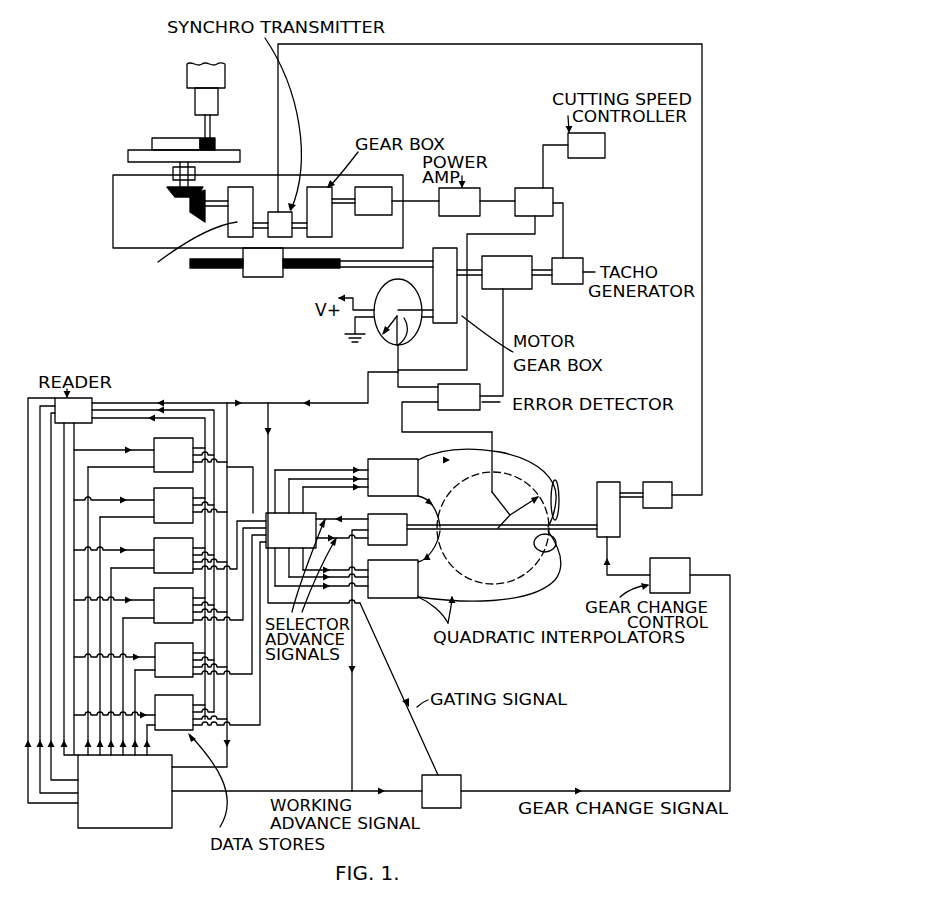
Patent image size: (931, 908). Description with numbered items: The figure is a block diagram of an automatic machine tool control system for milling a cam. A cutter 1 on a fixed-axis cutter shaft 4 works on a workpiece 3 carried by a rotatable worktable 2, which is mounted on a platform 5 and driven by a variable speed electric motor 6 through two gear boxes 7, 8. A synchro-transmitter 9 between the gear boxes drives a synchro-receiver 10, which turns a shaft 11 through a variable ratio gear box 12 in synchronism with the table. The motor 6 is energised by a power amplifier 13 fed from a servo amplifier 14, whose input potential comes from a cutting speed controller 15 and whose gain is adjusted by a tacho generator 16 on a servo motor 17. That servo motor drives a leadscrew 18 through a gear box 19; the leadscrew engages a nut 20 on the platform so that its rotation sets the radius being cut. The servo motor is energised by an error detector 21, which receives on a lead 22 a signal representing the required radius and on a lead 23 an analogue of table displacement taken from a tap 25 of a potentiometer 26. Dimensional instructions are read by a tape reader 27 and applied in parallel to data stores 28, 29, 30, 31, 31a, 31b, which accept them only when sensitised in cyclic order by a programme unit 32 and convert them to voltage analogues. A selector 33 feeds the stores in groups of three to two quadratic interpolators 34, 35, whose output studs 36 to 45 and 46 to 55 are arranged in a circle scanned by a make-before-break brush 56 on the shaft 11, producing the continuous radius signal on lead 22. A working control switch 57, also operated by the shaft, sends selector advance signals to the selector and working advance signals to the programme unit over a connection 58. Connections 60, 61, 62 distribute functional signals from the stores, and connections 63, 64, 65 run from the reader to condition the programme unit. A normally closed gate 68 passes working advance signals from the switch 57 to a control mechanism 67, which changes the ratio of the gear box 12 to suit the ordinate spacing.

The cutter 1 is at (218, 146).
The worktable 2 is at (128, 156).
The workpiece 3 is at (162, 138).
The cutter shaft 4 is at (213, 129).
The platform 5 is at (113, 203).
The electric motor 6 is at (371, 215).
The gear box 7 is at (323, 232).
The gear box 8 is at (236, 223).
The synchro-transmitter 9 is at (279, 212).
The synchro-receiver 10 is at (657, 482).
The shaft 11 is at (565, 531).
The gear box 12 is at (607, 482).
The power amplifier 13 is at (480, 192).
The servo amplifier 14 is at (553, 200).
The cutting speed controller 15 is at (605, 145).
The tacho generator 16 is at (569, 284).
The servo motor 17 is at (521, 289).
The leadscrew 18 is at (321, 268).
The gear box 19 is at (445, 323).
The nut 20 is at (268, 278).
The error detector 21 is at (471, 410).
The lead 22 is at (497, 443).
The lead 23 is at (398, 359).
The tap 25 is at (397, 315).
The potentiometer 26 is at (410, 334).
The tape reader 27 is at (92, 400).
The data store 28 is at (150, 455).
The data store 29 is at (150, 505).
The data store 30 is at (170, 547).
The data store 31 is at (170, 575).
The data store 31a is at (170, 606).
The data store 31b is at (170, 636).
The programme unit 32 is at (250, 804).
The selector 33 is at (291, 528).
The quadratic interpolator 34 is at (378, 472).
The quadratic interpolator 35 is at (397, 598).
The output stud 36 is at (440, 522).
The output stud 45 is at (556, 490).
The output stud 46 is at (548, 551).
The output stud 55 is at (441, 535).
The brush 56 is at (520, 524).
The working control switch 57 is at (361, 529).
The connection 58 is at (353, 747).
The connection 60 is at (205, 420).
The connection 61 is at (215, 437).
The connection 62 is at (228, 450).
The connection 63 is at (58, 781).
The connection 64 is at (65, 794).
The connection 65 is at (70, 809).
The control mechanism 67 is at (667, 563).
The gate 68 is at (462, 780).